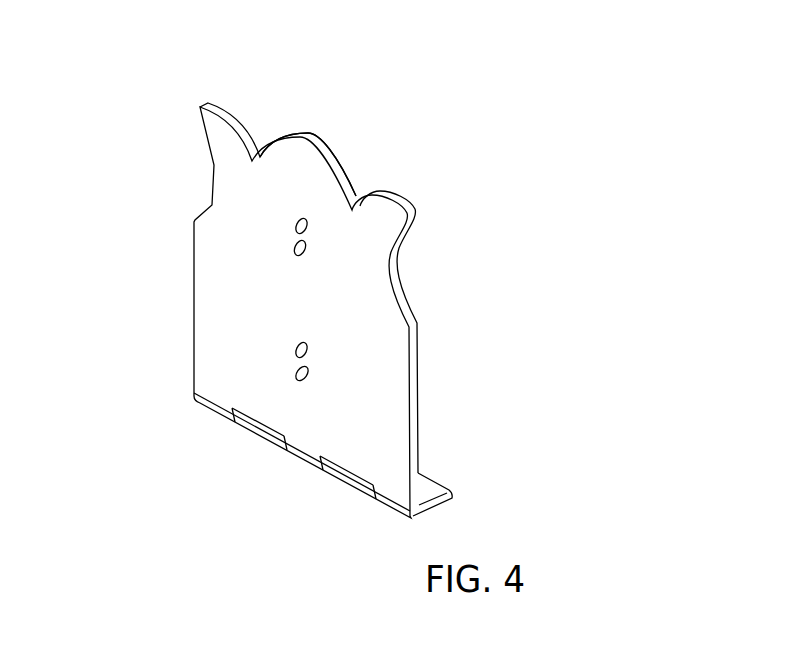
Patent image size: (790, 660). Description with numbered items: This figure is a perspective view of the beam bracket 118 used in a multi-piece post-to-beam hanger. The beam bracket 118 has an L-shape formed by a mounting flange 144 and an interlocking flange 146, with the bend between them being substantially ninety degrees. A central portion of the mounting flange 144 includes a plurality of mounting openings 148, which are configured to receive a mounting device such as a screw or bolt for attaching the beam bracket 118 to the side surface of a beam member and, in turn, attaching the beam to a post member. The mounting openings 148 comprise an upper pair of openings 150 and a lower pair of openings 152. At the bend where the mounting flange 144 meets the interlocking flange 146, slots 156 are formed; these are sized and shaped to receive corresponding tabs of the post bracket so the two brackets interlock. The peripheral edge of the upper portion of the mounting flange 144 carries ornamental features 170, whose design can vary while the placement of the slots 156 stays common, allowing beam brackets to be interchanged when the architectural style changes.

The beam bracket 118 is at (360, 295).
The mounting flange 144 is at (245, 195).
The ornamental features 170 is at (311, 130).
The mounting openings 148 is at (342, 241).
The upper pair of openings 150 is at (296, 347).
The lower pair of openings 152 is at (308, 372).
The interlocking flange 146 is at (430, 492).
The slots 156 is at (337, 477).